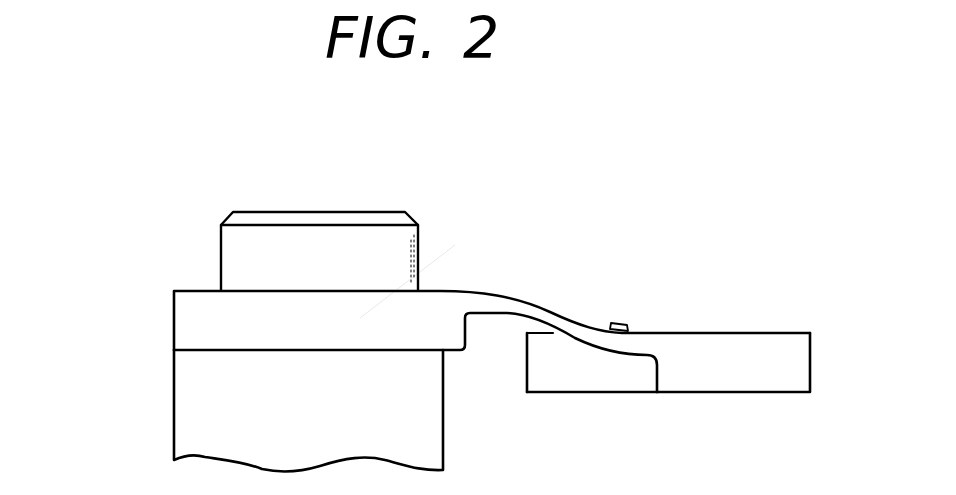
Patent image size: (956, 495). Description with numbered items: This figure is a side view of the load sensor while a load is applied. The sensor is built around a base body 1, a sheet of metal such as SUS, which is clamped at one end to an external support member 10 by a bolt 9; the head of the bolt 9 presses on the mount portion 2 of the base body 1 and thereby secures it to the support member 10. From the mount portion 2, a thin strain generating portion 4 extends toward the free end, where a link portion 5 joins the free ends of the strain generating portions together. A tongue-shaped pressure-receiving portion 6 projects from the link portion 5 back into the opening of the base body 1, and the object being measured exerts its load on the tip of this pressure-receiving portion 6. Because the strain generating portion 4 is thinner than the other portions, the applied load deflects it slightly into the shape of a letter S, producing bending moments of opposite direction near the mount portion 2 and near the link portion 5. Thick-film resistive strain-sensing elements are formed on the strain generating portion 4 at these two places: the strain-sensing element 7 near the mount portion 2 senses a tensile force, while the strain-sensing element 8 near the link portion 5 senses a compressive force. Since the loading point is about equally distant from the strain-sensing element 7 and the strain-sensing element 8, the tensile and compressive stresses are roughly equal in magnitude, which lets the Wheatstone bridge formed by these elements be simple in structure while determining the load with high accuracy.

The base body 1 is at (174, 327).
The mount portion 2 is at (360, 318).
The strain generating portion 4 is at (562, 313).
The link portion 5 is at (780, 380).
The pressure-receiving portion 6 is at (610, 378).
The strain-sensing element 7 is at (517, 297).
The strain-sensing element 8 is at (628, 322).
The bolt 9 is at (328, 233).
The support member 10 is at (183, 388).